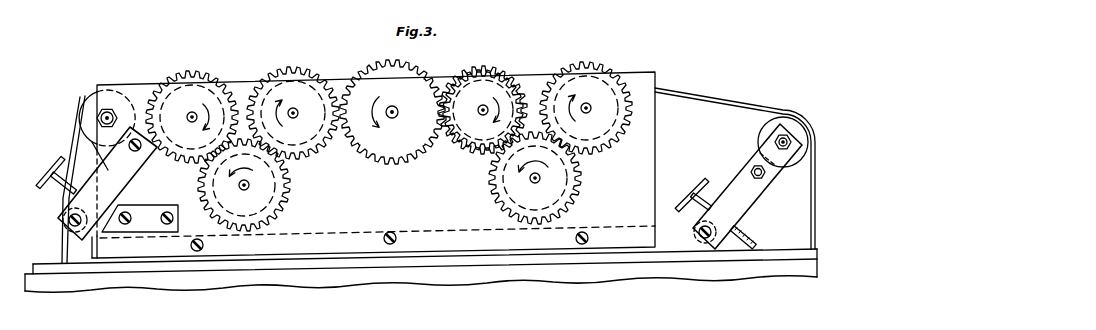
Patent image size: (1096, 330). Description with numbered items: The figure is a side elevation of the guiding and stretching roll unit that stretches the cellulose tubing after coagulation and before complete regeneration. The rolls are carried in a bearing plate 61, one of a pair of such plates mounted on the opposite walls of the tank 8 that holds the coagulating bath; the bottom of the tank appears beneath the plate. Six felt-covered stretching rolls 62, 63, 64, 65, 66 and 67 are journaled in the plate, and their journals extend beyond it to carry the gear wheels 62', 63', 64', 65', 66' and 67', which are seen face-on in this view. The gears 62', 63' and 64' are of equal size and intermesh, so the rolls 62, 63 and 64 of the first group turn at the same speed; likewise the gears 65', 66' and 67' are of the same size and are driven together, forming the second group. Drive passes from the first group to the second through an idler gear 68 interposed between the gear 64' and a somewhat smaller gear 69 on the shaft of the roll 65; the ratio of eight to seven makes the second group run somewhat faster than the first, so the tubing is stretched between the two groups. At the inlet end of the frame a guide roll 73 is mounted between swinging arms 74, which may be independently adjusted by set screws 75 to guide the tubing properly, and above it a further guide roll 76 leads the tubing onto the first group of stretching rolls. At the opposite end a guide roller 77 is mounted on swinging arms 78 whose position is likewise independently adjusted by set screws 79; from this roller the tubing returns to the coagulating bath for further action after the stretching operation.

The tank 8 is at (353, 286).
The bearing plate 61 is at (655, 137).
The stretching roll 62 is at (192, 110).
The gear wheel 62' is at (192, 99).
The stretching roll 63 is at (257, 185).
The gear wheel 63' is at (268, 185).
The stretching roll 64 is at (293, 105).
The gear wheel 64' is at (293, 98).
The stretching roll 65 is at (483, 101).
The gear wheel 65' is at (483, 98).
The stretching roll 66 is at (526, 178).
The gear wheel 66' is at (554, 178).
The stretching roll 67 is at (586, 98).
The gear wheel 67' is at (586, 91).
The idler gear 68 is at (388, 162).
The gear 69 is at (476, 150).
The guide roll 73 is at (68, 234).
The swinging arms 74 is at (78, 137).
The set screws 75 is at (49, 170).
The guide roll 76 is at (83, 106).
The guide roller 77 is at (782, 118).
The swinging arms 78 is at (735, 184).
The set screws 79 is at (694, 196).